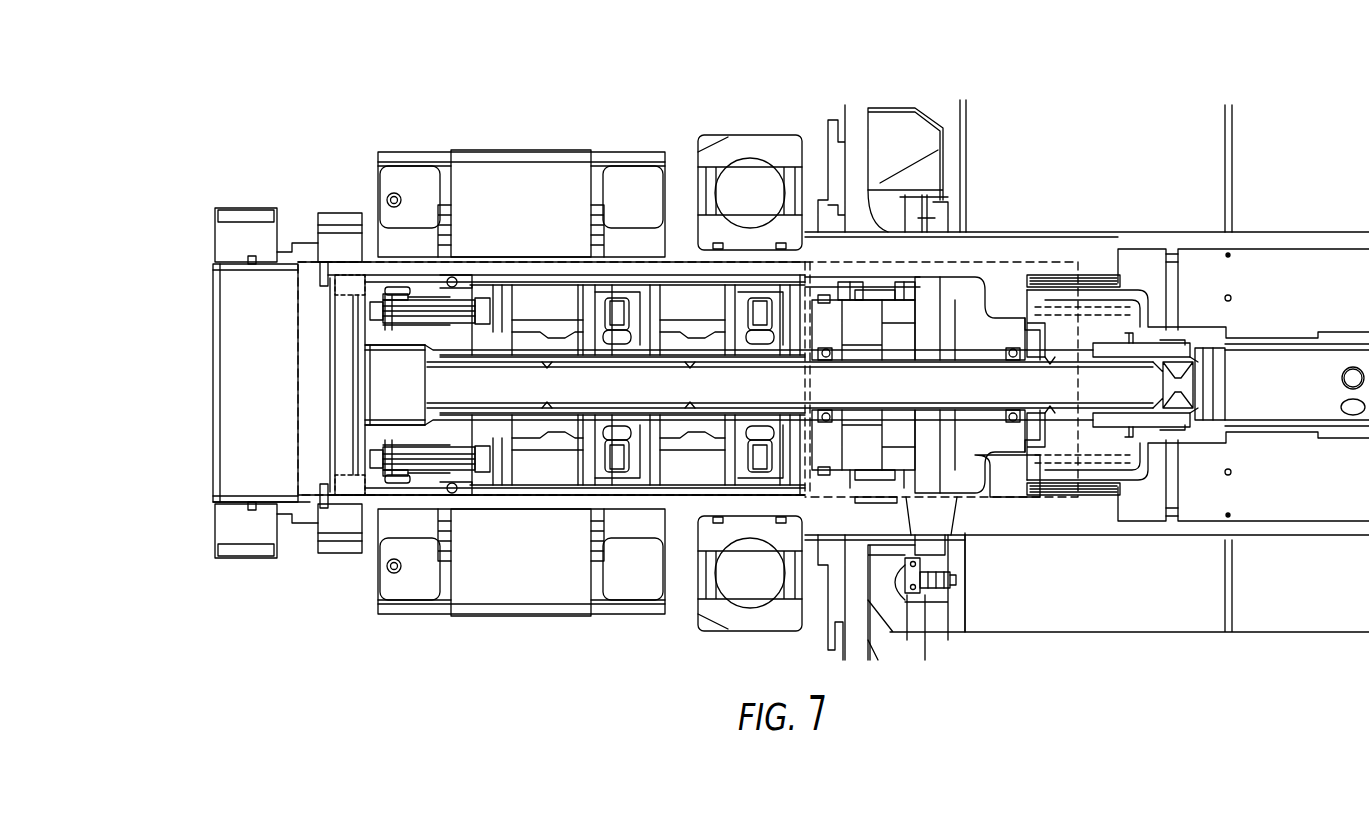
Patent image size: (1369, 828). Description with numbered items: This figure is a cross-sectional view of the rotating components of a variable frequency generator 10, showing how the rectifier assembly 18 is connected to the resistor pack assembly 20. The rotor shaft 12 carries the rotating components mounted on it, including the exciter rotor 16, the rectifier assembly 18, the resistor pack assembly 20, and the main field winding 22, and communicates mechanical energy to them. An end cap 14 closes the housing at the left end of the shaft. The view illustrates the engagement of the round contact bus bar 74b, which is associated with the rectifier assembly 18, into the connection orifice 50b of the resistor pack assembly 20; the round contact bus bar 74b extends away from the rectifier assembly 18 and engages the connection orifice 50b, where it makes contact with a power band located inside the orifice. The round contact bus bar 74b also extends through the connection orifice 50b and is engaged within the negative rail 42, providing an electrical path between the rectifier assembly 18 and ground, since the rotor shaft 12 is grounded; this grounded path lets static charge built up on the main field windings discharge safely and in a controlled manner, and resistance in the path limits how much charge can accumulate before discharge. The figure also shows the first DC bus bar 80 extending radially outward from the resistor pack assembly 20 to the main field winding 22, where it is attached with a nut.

The generator 10 is at (247, 88).
The rotor shaft 12 is at (287, 388).
The end cap 14 is at (222, 208).
The exciter rotor 16 is at (384, 152).
The rectifier assembly 18 is at (298, 300).
The resistor pack assembly 20 is at (1042, 262).
The main field winding 22 is at (1002, 116).
The negative rail 42 is at (962, 298).
The connection orifice 50b is at (851, 282).
The round contact bus bar 74b is at (904, 282).
The first DC bus bar 80 is at (897, 546).